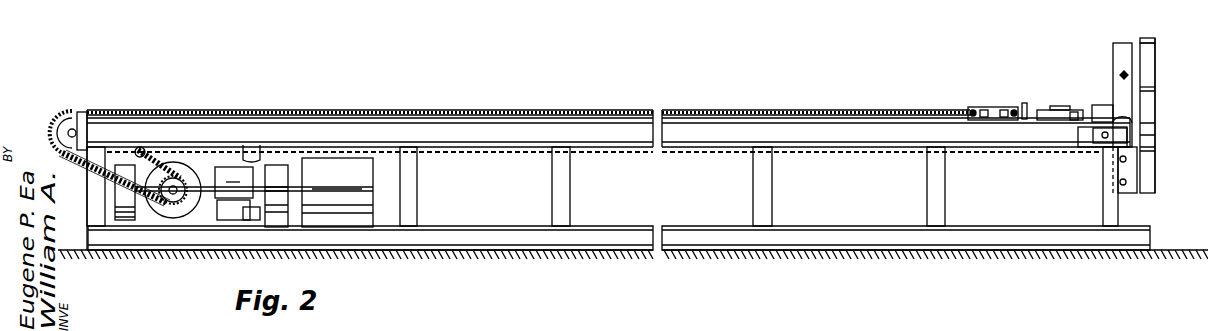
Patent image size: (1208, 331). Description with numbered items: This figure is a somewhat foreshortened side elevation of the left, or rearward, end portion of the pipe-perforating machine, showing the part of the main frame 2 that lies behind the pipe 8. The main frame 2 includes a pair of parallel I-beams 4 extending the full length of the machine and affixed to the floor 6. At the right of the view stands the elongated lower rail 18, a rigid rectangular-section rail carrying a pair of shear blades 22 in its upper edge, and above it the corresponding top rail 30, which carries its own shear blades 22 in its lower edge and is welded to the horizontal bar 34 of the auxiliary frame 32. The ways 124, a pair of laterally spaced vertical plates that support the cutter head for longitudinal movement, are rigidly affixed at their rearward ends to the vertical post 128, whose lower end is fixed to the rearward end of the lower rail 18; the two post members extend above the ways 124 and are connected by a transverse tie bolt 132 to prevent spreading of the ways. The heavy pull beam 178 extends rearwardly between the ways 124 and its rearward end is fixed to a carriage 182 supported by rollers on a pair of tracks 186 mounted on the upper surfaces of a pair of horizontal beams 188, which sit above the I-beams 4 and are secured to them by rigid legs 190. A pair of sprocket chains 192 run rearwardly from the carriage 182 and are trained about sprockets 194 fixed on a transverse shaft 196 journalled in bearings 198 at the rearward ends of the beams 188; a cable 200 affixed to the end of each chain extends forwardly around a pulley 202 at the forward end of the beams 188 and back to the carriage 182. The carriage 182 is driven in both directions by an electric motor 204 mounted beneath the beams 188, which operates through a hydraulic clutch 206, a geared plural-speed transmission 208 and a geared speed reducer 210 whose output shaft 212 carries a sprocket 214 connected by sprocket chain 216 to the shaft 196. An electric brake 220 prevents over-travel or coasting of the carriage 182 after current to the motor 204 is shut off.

The main frame 2 is at (855, 135).
The I-beams 4 is at (588, 240).
The floor 6 is at (1170, 250).
The cylindrical pipe 8 is at (1152, 111).
The lower rail 18 is at (1150, 178).
The shear blades 22 is at (1155, 90).
The top rail 30 is at (1152, 64).
The auxiliary frame 32 is at (1140, 35).
The horizontal bar 34 is at (1152, 38).
The ways 124 is at (1098, 105).
The vertical post 128 is at (1113, 50).
The tie bolt 132 is at (1121, 74).
The pull beam 178 is at (1068, 107).
The carriage 182 is at (971, 110).
The tracks 186 is at (278, 124).
The horizontal beams 188 is at (699, 138).
The legs 190 is at (95, 175).
The sprocket chains 192 is at (492, 112).
The sprockets 194 is at (74, 113).
The transverse shaft 196 is at (62, 115).
The bearings 198 is at (52, 130).
The cable 200 is at (484, 157).
The pulleys 202 is at (1078, 142).
The electric motor 204 is at (348, 205).
The hydraulic clutch 206 is at (283, 212).
The transmission 208 is at (228, 212).
The speed reducer 210 is at (183, 215).
The output shaft 212 is at (172, 194).
The sprocket 214 is at (165, 170).
The sprocket chain 216 is at (100, 178).
The electric brake 220 is at (125, 212).